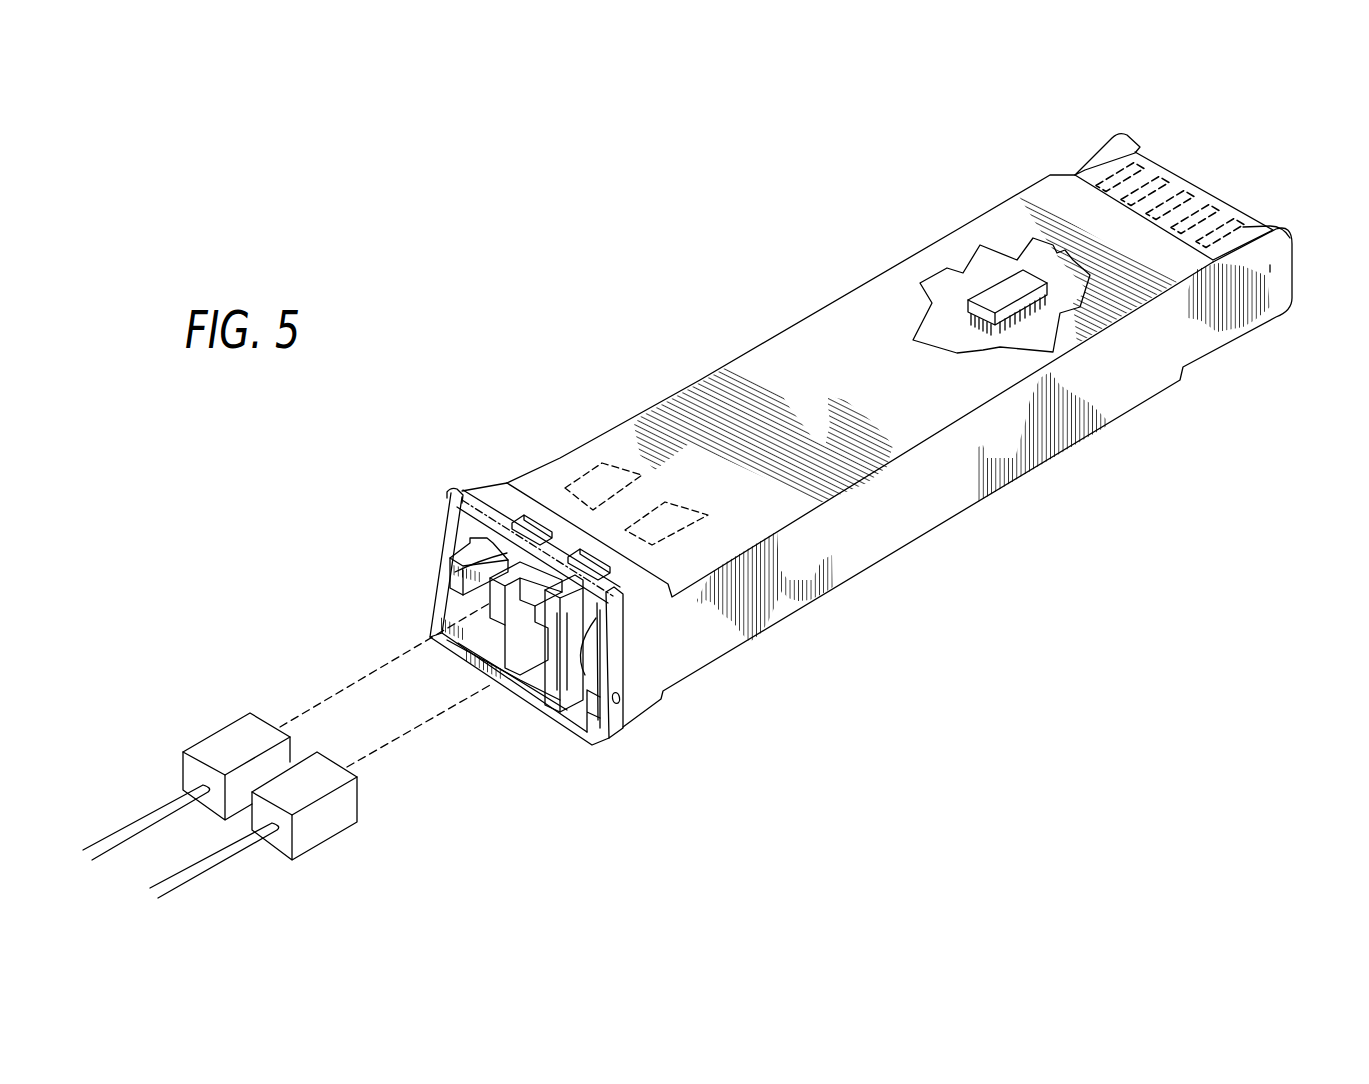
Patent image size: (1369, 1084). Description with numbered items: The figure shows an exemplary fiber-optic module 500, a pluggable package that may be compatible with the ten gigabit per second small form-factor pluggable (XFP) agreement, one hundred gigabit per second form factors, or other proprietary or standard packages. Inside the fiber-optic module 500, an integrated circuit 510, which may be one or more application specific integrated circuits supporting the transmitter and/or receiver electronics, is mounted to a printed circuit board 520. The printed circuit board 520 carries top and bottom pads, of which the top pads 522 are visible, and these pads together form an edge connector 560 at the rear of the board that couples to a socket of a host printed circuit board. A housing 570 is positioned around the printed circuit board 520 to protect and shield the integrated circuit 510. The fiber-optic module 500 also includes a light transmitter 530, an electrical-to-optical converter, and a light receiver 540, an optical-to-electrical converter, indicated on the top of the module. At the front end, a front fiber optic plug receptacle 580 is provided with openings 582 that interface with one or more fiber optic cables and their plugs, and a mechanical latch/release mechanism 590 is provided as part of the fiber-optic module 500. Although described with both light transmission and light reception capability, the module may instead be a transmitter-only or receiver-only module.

The fiber-optic module 500 is at (703, 262).
The integrated circuit 510 is at (1005, 293).
The printed circuit board 520 is at (1103, 192).
The top pads 522 is at (1163, 197).
The light transmitter 530 is at (668, 517).
The light receiver 540 is at (600, 487).
The edge connector 560 is at (1240, 213).
The housing 570 is at (843, 298).
The front fiber optic plug receptacle 580 is at (607, 737).
The openings 582 is at (547, 678).
The mechanical latch/release mechanism 590 is at (580, 725).